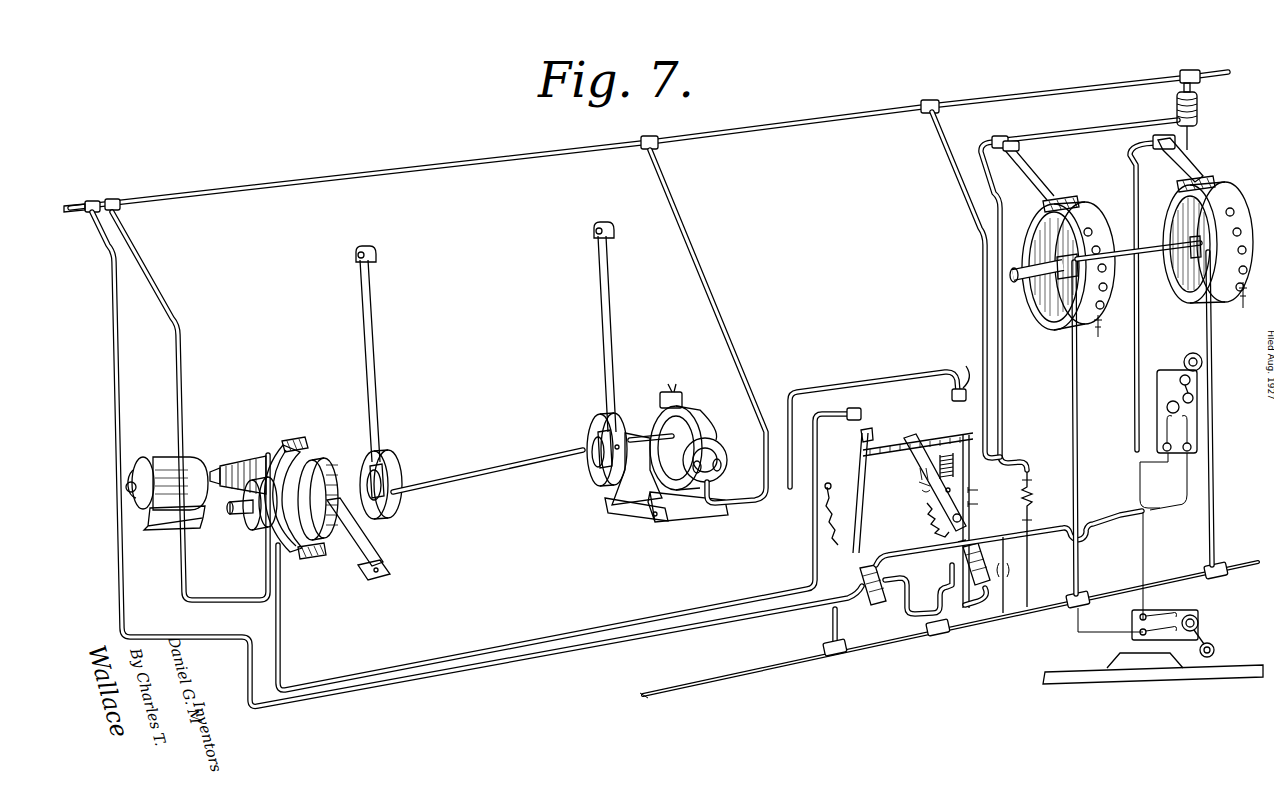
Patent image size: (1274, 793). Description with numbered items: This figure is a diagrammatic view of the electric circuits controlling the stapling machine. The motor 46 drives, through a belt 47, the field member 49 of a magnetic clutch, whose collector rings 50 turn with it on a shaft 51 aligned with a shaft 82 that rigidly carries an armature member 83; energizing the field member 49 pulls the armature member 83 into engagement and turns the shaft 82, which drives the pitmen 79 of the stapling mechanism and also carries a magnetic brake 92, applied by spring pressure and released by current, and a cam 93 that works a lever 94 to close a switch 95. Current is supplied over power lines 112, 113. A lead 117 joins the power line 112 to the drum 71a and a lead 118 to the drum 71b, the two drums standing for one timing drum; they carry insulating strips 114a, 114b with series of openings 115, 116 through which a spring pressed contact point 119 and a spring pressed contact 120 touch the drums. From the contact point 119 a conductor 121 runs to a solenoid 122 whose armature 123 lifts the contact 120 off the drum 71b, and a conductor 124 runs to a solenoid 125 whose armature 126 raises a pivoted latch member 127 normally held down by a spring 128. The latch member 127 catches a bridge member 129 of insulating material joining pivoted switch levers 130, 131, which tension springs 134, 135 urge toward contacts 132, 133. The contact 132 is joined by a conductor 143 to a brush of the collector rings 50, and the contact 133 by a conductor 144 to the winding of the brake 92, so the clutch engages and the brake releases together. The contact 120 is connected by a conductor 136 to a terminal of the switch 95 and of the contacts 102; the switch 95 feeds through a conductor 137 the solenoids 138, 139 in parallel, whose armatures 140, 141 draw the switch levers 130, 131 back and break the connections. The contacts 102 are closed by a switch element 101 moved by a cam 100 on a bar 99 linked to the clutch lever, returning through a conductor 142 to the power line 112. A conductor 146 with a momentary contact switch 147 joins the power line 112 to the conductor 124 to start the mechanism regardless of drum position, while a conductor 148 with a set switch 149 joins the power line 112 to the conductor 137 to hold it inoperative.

The motor 46 is at (165, 462).
The belt 47 is at (228, 464).
The field member 49 is at (318, 460).
The collector rings 50 is at (256, 528).
The shaft 51 is at (236, 512).
The armature member 83 is at (345, 520).
The pitmen 79 is at (356, 312).
The shaft 82 is at (483, 468).
The magnetic brake 92 is at (694, 428).
The power line 113 is at (343, 151).
The conductor 143 is at (492, 650).
The power line 112 is at (742, 672).
The conductor 144 is at (833, 387).
The armature 126 is at (948, 361).
The contact 133 is at (950, 396).
The contact 132 is at (846, 418).
The bridge member 129 is at (880, 447).
The solenoid 125 is at (944, 453).
The tension spring 134 is at (838, 503).
The switch lever 130 is at (918, 464).
The spring 128 is at (919, 492).
The tension spring 135 is at (926, 527).
The solenoid 138 is at (910, 580).
The solenoid 139 is at (975, 546).
The switch lever 131 is at (987, 492).
The latch member 127 is at (988, 506).
The set switch 149 is at (978, 590).
The armature 140 is at (860, 648).
The armature 141 is at (950, 656).
The conductor 148 is at (1004, 614).
The conductor 146 is at (1030, 588).
The momentary contact switch 147 is at (1008, 480).
The conductor 142 is at (1078, 622).
The conductor 137 is at (1097, 513).
The lead 117 is at (1078, 428).
The conductor 124 is at (997, 302).
The conductor 136 is at (1138, 362).
The conductor 121 is at (1033, 137).
The solenoid 122 is at (1200, 112).
The armature 123 is at (1190, 138).
The spring pressed contact 120 is at (1193, 170).
The spring pressed contact point 119 is at (1032, 170).
The strip of insulating material 114a is at (1030, 225).
The strip of insulating material 114b is at (1165, 280).
The drum 71a is at (1060, 293).
The drum 71b is at (1185, 280).
The openings 115 is at (1098, 338).
The openings 116 is at (1243, 308).
The lead 118 is at (1203, 364).
The cam 93 is at (1191, 380).
The lever 94 is at (1194, 397).
The switch 95 is at (1181, 408).
The contacts 102 is at (1198, 608).
The switch element 101 is at (1197, 640).
The bar 99 is at (1060, 677).
The cam 100 is at (1135, 663).